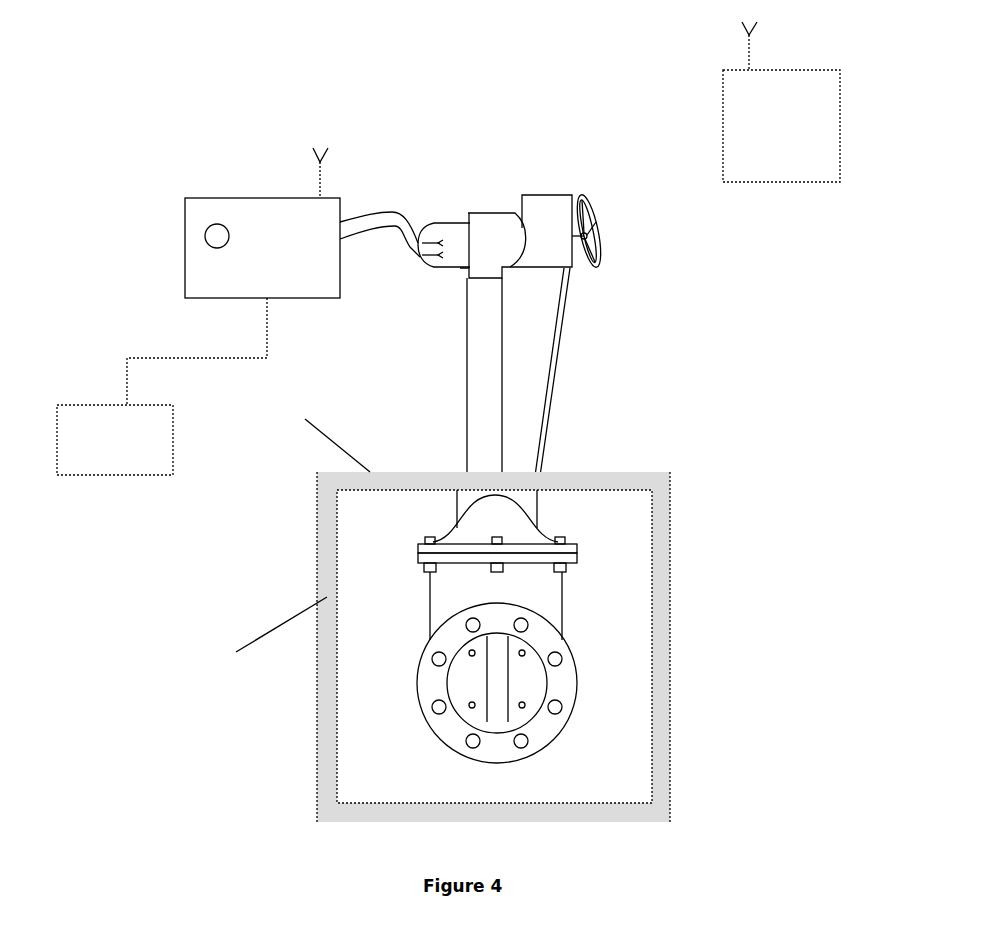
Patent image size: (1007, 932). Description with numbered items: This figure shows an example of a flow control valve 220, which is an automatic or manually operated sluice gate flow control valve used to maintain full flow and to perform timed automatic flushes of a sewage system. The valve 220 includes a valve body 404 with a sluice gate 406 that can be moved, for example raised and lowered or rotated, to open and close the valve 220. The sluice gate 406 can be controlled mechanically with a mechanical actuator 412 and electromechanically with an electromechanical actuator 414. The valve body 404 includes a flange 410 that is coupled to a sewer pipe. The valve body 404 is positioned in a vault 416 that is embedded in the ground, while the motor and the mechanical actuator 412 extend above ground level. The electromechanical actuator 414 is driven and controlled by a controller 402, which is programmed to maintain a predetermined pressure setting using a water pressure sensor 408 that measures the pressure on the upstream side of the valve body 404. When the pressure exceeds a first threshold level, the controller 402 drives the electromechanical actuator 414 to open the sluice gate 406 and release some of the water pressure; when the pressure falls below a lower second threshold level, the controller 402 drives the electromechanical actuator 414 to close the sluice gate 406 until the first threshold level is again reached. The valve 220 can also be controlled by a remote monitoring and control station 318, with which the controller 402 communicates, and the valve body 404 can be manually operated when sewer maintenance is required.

The flow control valve 220 is at (127, 125).
The remote monitoring and control station 318 is at (723, 87).
The controller 402 is at (199, 243).
The valve body 404 is at (552, 592).
The sluice gate 406 is at (523, 683).
The water pressure sensor 408 is at (117, 475).
The flange 410 is at (557, 675).
The mechanical actuator 412 is at (598, 245).
The electromechanical actuator 414 is at (470, 213).
The vault 416 is at (655, 472).